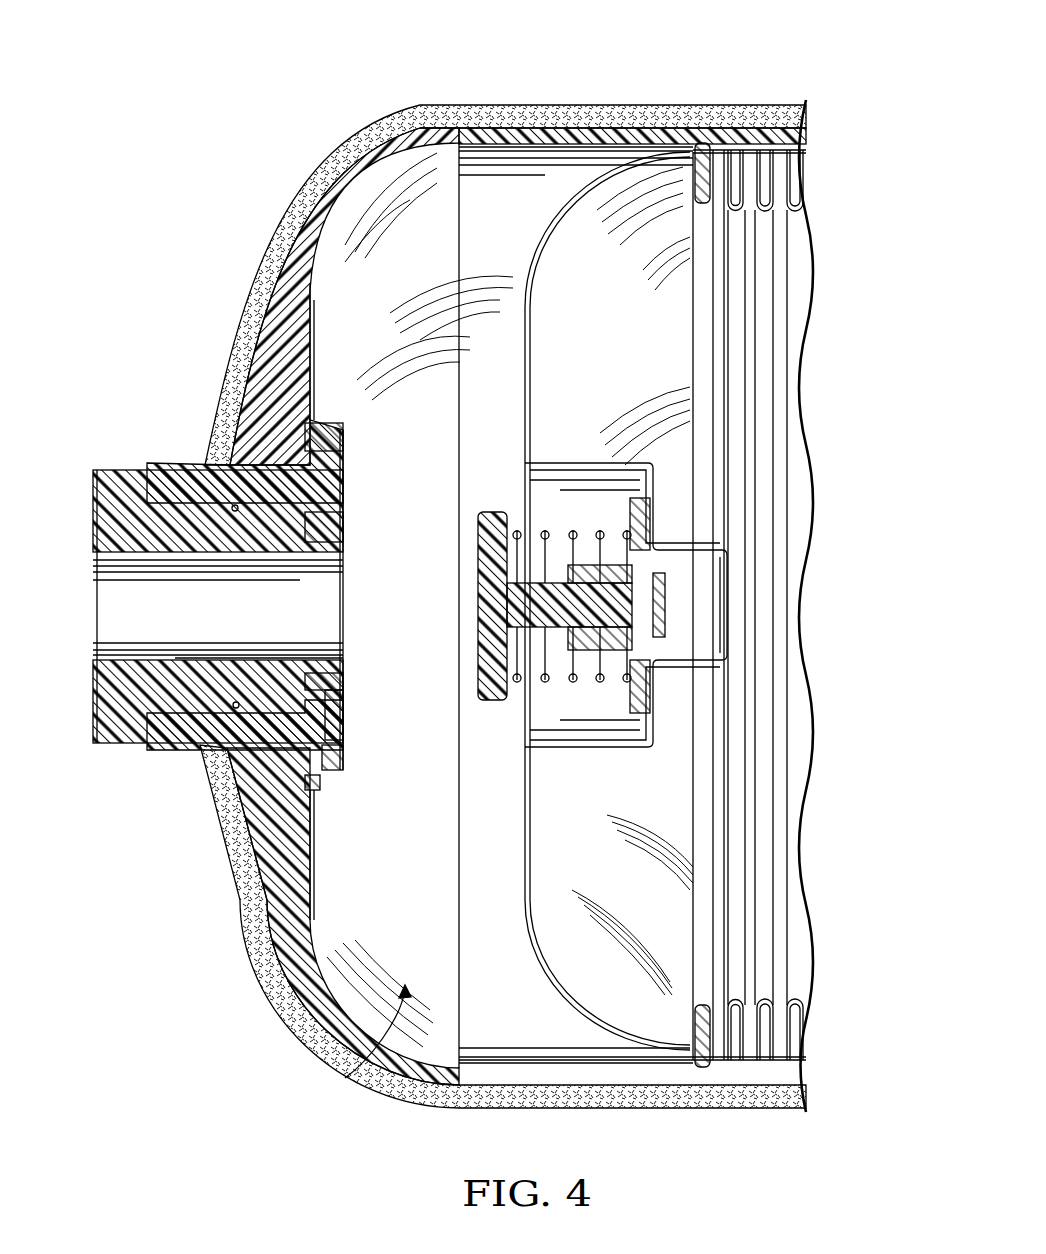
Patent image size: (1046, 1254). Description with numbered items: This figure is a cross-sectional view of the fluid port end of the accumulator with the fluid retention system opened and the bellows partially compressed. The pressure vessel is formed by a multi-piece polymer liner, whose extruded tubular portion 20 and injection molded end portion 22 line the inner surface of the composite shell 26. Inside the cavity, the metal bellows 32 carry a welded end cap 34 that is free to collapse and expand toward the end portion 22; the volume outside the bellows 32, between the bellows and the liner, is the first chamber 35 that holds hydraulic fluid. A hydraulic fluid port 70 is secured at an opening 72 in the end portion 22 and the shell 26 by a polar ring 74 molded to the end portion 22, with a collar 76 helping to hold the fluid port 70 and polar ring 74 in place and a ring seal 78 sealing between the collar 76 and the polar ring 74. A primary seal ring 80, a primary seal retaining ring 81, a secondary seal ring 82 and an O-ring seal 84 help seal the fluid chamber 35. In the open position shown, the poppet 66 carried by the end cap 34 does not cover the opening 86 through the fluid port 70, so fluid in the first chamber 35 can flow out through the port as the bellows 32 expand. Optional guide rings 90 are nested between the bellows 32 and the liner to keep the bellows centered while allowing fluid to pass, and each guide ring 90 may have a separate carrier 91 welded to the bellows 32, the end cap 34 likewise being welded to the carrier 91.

The tubular portion 20 is at (597, 128).
The end portion 22 is at (298, 258).
The composite shell 26 is at (512, 105).
The metal bellows 32 is at (786, 150).
The end cap 34 is at (590, 1030).
The first chamber 35 is at (345, 1078).
The poppet 66 is at (476, 550).
The hydraulic fluid port 70 is at (128, 700).
The opening 72 is at (247, 455).
The polar ring 74 is at (252, 762).
The collar 76 is at (313, 790).
The ring seal 78 is at (253, 857).
The primary seal ring 80 is at (310, 668).
The primary seal retaining ring 81 is at (343, 731).
The secondary seal ring 82 is at (333, 790).
The O-ring seal 84 is at (238, 705).
The opening 86 is at (160, 568).
The guide ring 90 is at (703, 1065).
The carrier 91 is at (690, 1025).